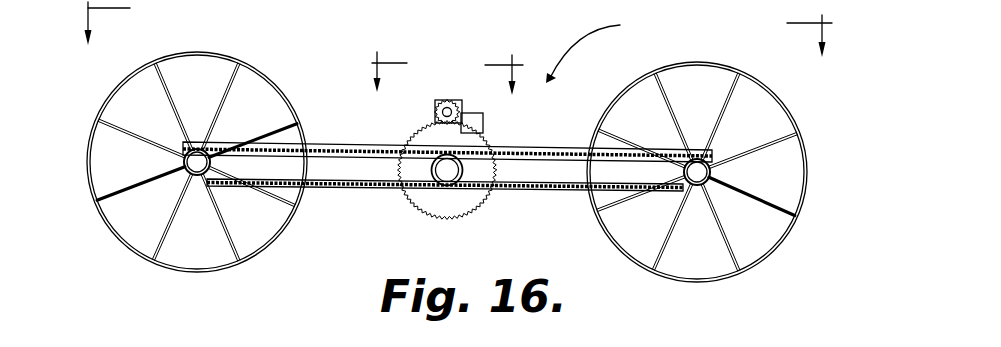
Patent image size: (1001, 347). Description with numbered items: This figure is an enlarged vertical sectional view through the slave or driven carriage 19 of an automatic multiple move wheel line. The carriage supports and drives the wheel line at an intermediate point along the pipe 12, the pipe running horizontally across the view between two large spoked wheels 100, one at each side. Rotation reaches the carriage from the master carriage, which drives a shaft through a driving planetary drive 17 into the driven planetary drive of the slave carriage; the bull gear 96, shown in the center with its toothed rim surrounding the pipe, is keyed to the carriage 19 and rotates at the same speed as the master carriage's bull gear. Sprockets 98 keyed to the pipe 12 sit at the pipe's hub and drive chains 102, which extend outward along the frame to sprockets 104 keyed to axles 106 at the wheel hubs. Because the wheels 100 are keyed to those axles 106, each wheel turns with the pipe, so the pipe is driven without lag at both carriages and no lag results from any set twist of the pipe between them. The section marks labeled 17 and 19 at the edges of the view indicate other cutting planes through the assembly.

The pipe 12 is at (462, 162).
The driving planetary drive 17 is at (458, 33).
The slave carriage 19 is at (509, 57).
The bull gear 96 is at (452, 218).
The sprocket 98 is at (432, 163).
The wheel 100 is at (137, 255).
The chain 102 is at (333, 186).
The sprocket 104 is at (245, 182).
The axle 106 is at (185, 175).